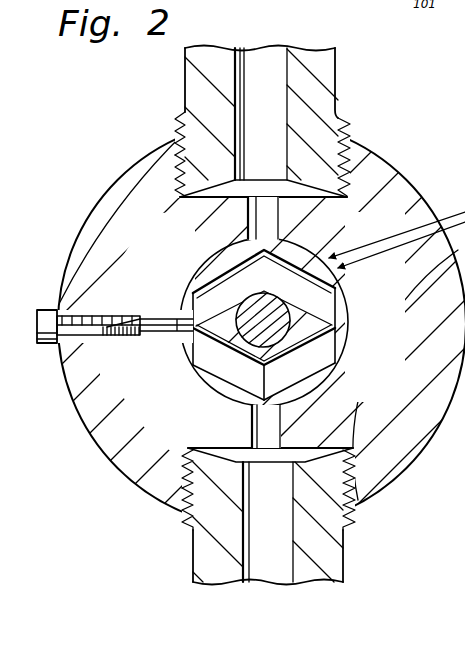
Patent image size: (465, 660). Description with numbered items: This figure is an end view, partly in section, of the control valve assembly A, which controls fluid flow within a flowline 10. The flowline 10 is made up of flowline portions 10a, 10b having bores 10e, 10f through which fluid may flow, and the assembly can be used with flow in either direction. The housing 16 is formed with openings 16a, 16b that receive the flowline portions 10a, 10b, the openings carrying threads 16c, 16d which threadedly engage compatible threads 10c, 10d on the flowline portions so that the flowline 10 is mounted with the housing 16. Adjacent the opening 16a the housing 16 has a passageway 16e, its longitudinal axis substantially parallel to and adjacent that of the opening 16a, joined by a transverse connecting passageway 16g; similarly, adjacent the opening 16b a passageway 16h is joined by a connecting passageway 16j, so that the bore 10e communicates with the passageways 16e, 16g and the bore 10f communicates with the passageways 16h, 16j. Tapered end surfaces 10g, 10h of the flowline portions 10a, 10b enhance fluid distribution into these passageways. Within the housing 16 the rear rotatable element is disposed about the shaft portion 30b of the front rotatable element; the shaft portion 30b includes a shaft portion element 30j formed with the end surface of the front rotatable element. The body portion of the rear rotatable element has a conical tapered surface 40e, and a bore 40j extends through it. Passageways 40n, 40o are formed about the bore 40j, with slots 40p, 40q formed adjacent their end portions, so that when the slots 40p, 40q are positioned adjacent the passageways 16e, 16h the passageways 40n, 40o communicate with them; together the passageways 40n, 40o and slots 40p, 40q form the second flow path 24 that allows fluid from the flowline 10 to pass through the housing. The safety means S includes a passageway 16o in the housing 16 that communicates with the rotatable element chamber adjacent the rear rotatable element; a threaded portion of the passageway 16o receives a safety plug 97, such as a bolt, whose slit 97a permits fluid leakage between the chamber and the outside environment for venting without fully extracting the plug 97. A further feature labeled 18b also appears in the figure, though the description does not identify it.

The flowline 10 is at (315, 308).
The flowline portion 10a is at (338, 67).
The flowline portion 10b is at (345, 542).
The threads 10c is at (343, 133).
The threads 10d is at (360, 510).
The bore 10e is at (277, 52).
The bore 10f is at (293, 558).
The tapered end surface 10g is at (364, 203).
The tapered end surface 10h is at (233, 448).
The housing 16 is at (263, 188).
The opening 16a is at (182, 172).
The opening 16b is at (243, 522).
The threads 16c is at (183, 143).
The threads 16d is at (210, 458).
The passageway 16e is at (250, 225).
The connecting passageway 16g is at (292, 197).
The passageway 16h is at (250, 420).
The connecting passageway 16j is at (350, 412).
The passageway 16o is at (158, 319).
The lower frame face 18b is at (325, 385).
The second flow path 24 is at (280, 272).
The shaft portion 30b is at (297, 334).
The shaft portion element 30j is at (190, 374).
The tapered surface 40e is at (337, 387).
The bore 40j is at (350, 317).
The passageway 40n is at (228, 262).
The passageway 40o is at (200, 386).
The slot 40p is at (185, 302).
The slot 40q is at (348, 288).
The safety plug 97 is at (45, 309).
The slit 97a is at (120, 316).
The control valve assembly A is at (382, 145).
The safety means S is at (145, 340).